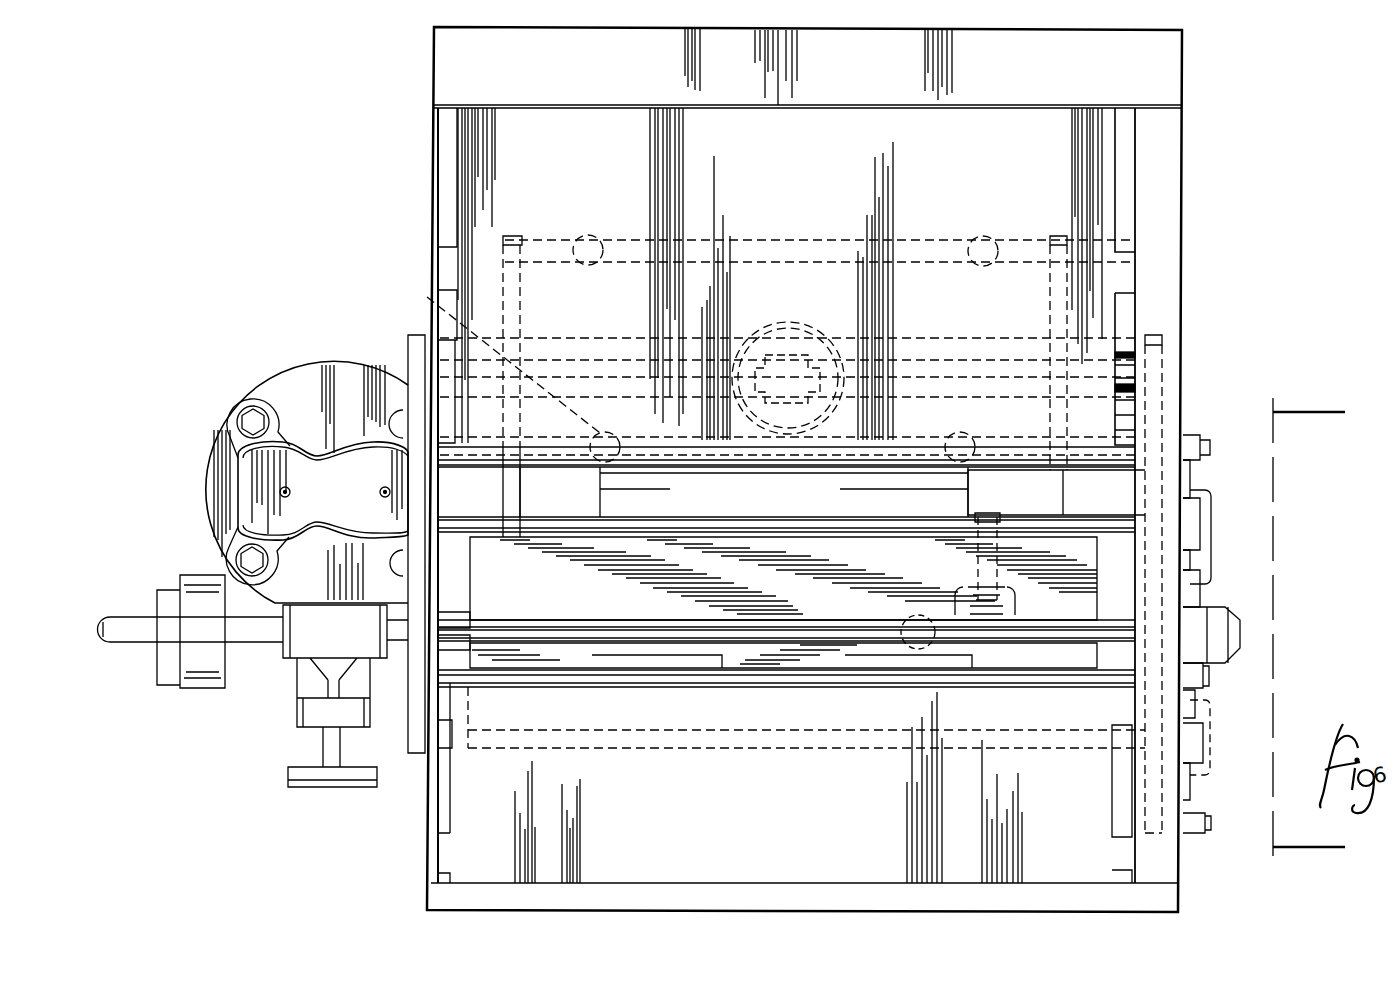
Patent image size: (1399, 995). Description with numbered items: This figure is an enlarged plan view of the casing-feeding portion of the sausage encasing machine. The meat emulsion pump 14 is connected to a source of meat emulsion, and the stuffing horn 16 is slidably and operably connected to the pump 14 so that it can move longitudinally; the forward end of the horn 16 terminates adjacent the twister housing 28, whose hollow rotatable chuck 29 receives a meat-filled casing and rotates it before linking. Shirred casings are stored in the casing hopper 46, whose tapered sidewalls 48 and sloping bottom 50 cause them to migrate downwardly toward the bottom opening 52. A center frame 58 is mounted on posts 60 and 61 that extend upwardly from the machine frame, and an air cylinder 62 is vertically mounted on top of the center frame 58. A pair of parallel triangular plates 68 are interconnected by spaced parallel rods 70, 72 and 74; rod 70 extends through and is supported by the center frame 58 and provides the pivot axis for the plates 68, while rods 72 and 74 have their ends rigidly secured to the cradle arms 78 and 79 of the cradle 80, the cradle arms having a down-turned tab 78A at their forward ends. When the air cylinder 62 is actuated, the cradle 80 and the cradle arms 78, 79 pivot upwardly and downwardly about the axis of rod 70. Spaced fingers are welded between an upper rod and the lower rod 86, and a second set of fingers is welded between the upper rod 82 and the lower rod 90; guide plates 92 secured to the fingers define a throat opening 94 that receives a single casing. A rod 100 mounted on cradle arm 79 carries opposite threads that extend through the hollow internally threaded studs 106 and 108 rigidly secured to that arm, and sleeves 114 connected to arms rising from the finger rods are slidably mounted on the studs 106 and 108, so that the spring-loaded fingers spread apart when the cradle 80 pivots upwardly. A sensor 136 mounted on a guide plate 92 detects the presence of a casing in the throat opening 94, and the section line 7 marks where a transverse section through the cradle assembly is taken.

The section line 7- 7 is at (1309, 633).
The meat emulsion pump 14 is at (215, 542).
The stuffing horn 16 is at (150, 620).
The twister housing 28 is at (1212, 570).
The hollow rotatable chuck 29 is at (1240, 602).
The casing hopper 46 is at (1190, 187).
The tapered sidewalls 48 is at (488, 250).
The sloping bottom 50 is at (478, 256).
The bottom opening 52 is at (1012, 498).
The center frame 58 is at (1123, 305).
The post 60 is at (462, 268).
The post 61 is at (438, 306).
The air cylinder 62 is at (795, 322).
The triangular plates 68 is at (473, 288).
The rod 70 is at (790, 262).
The rod 72 is at (950, 378).
The rod 74 is at (1005, 375).
The cradle arm 78 is at (408, 336).
The down-turned tab 78A is at (416, 754).
The cradle arm 79 is at (1165, 361).
The cradle 80 is at (932, 240).
The rod 82 is at (440, 815).
The rod 86 is at (455, 615).
The rod 90 is at (465, 640).
The guide plates 92 is at (552, 660).
The throat opening 94 is at (680, 663).
The rod 100 is at (1195, 645).
The stud 106 is at (1200, 695).
The stud 108 is at (1195, 560).
The sleeves 114 is at (1190, 516).
The sensor 136 is at (990, 620).